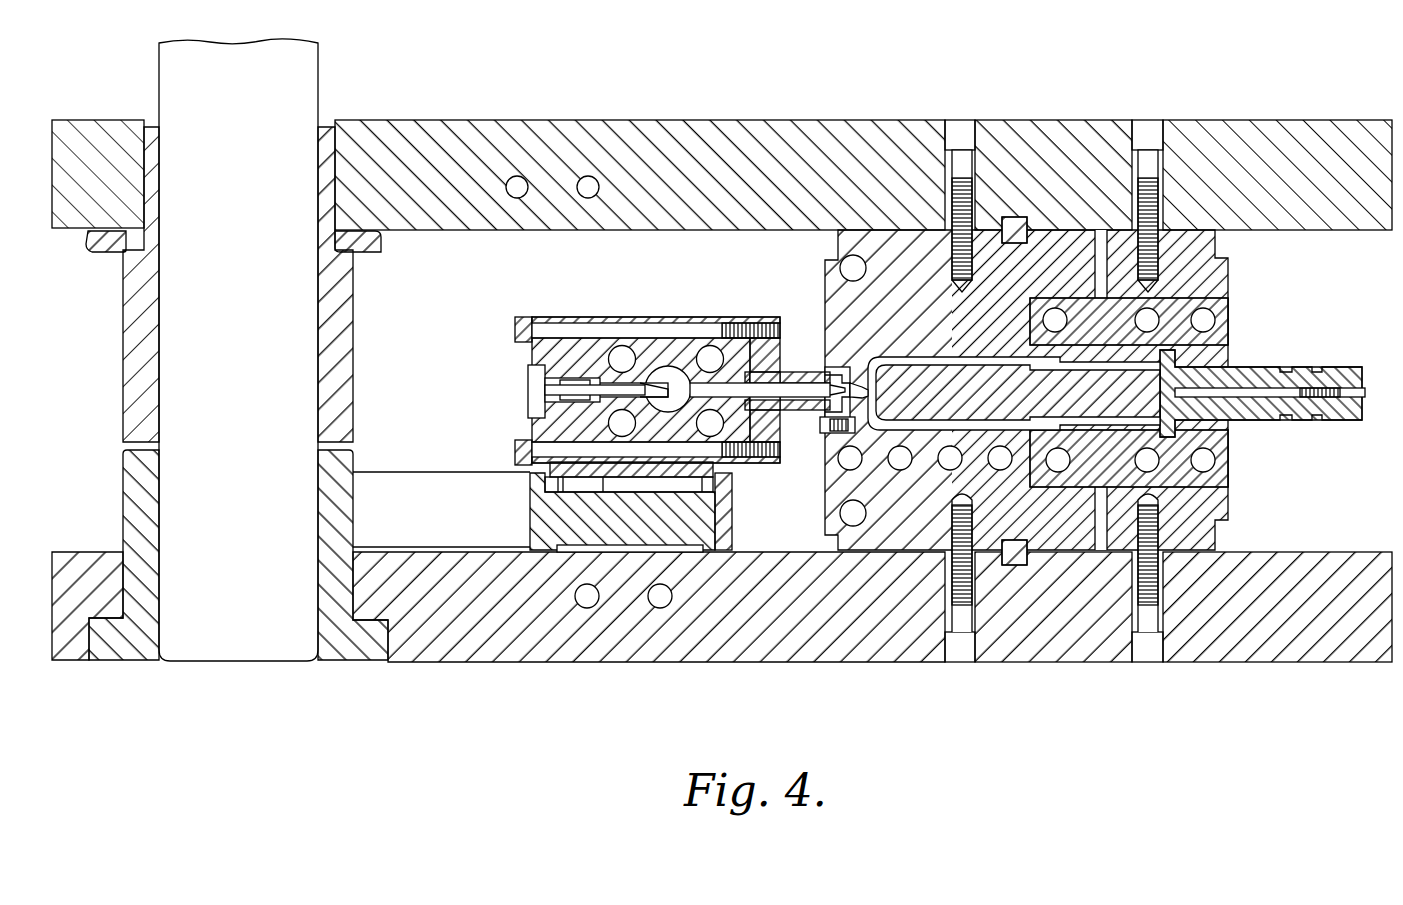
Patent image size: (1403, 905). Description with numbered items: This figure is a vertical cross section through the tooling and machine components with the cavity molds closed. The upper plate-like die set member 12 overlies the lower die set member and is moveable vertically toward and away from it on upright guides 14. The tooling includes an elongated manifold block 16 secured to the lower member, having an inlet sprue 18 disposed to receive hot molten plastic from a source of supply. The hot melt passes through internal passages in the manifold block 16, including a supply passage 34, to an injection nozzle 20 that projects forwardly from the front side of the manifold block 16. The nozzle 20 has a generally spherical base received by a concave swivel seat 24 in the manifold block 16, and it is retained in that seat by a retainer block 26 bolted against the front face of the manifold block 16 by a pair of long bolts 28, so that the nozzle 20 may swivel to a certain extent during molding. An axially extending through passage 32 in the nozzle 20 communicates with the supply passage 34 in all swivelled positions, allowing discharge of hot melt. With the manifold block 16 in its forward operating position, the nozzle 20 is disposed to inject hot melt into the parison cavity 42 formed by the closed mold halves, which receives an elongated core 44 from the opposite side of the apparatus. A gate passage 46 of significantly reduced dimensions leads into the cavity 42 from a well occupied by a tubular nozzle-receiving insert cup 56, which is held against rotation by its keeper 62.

The upper plate-like die set member 12 is at (602, 140).
The upright guides 14 is at (238, 58).
The manifold block 16 is at (545, 360).
The inlet sprue 18 is at (530, 400).
The injection nozzle 20 is at (788, 407).
The concave swivel seat 24 is at (760, 372).
The retainer block 26 is at (762, 348).
The long bolts 28 is at (568, 330).
The through passage 32 is at (757, 392).
The supply passage 34 is at (700, 387).
The parison cavity 42 is at (917, 360).
The elongated core 44 is at (935, 400).
The gate passage 46 is at (860, 378).
The nozzle-receiving insert cup 56 is at (840, 360).
The keeper 62 is at (823, 432).